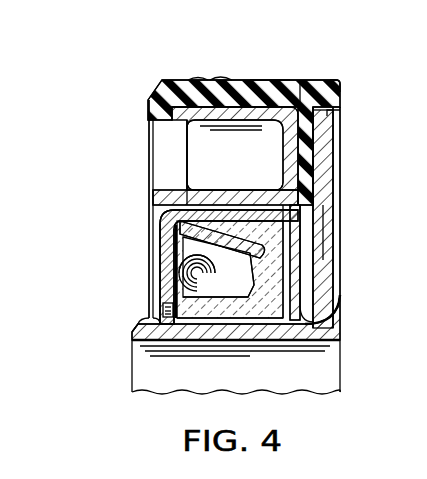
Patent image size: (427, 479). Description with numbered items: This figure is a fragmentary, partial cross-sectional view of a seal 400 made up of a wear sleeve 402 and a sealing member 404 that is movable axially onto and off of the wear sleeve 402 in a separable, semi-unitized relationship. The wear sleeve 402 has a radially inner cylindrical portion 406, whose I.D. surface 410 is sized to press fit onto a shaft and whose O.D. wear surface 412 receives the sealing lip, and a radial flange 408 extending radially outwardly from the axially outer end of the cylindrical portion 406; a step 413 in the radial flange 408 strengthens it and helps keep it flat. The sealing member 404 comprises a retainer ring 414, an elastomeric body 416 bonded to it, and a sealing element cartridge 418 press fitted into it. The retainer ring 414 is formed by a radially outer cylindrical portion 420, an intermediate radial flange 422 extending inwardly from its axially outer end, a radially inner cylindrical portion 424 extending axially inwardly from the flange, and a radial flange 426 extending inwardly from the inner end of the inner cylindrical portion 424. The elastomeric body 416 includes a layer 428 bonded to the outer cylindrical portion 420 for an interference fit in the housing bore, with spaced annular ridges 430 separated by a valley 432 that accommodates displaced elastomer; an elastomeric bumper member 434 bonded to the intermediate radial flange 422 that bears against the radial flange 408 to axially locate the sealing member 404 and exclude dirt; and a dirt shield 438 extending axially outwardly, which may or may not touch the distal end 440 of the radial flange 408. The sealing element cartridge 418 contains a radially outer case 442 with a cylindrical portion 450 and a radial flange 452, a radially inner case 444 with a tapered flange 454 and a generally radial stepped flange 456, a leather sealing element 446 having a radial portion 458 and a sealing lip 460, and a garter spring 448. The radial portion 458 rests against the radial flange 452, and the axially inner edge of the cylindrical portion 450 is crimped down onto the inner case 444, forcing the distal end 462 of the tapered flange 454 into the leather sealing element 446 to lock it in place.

The seal 400 is at (136, 87).
The wear sleeve 402 is at (404, 250).
The sealing member 404 is at (342, 81).
The radially inner cylindrical portion 406 is at (229, 343).
The radial flange 408 is at (322, 228).
The I.D. surface 410 is at (148, 344).
The O.D. wear surface 412 is at (142, 324).
The step 413 is at (334, 197).
The retainer ring 414 is at (149, 143).
The elastomeric body 416 is at (267, 87).
The sealing element cartridge 418 is at (161, 268).
The radially outer cylindrical portion 420 is at (252, 118).
The intermediate radial flange 422 is at (324, 152).
The radially inner cylindrical portion 424 is at (246, 194).
The radial flange 426 is at (160, 226).
The layer 428 is at (296, 83).
The annular ridges 430 is at (236, 78).
The valley 432 is at (214, 65).
The elastomeric bumper member 434 is at (324, 173).
The dirt shield 438 is at (341, 90).
The distal end 440 is at (336, 110).
The radially outer case 442 is at (163, 208).
The radially inner case 444 is at (162, 260).
The leather sealing element 446 is at (340, 316).
The garter spring 448 is at (172, 276).
The cylindrical portion 450 is at (191, 136).
The radial flange 452 is at (318, 282).
The tapered flange 454 is at (212, 262).
The generally radial stepped flange 456 is at (160, 297).
The radial portion 458 is at (318, 258).
The sealing lip 460 is at (186, 344).
The distal end 462 is at (300, 342).